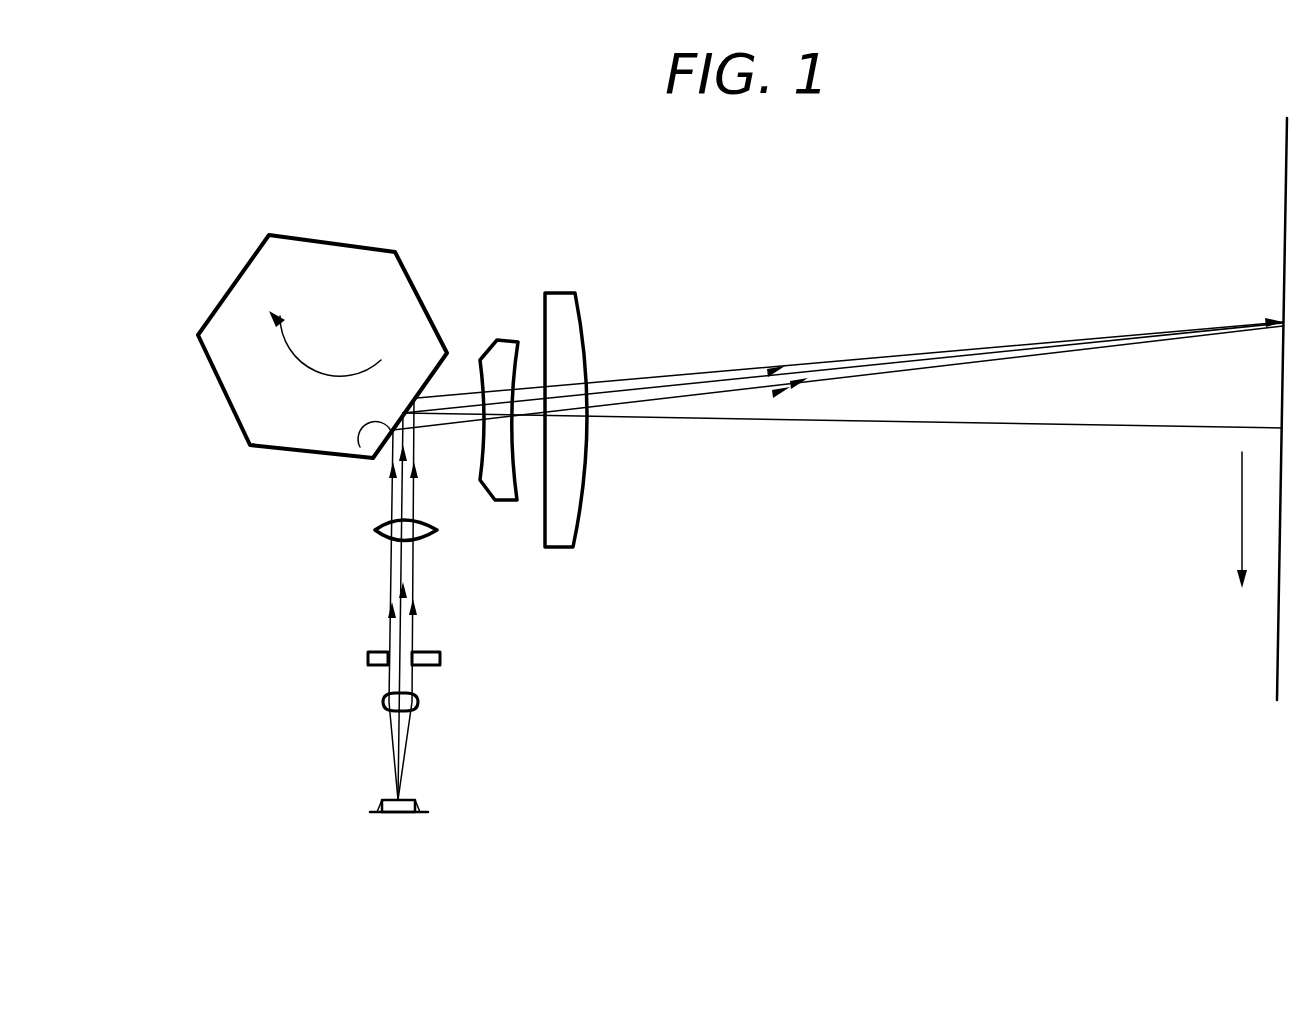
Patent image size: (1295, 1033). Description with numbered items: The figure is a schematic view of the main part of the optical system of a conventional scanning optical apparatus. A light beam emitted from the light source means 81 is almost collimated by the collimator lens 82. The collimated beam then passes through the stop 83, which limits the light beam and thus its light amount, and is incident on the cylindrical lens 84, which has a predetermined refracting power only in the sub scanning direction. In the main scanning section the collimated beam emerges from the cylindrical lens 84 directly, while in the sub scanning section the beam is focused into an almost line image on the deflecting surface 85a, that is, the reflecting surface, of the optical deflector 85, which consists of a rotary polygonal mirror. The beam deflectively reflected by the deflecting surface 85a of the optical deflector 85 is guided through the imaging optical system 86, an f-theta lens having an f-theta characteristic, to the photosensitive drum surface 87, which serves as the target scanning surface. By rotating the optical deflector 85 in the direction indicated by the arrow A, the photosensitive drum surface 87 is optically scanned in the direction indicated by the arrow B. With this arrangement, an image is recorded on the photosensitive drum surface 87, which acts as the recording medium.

The light source means 81 is at (392, 815).
The collimator lens 82 is at (418, 704).
The stop 83 is at (440, 658).
The cylindrical lens 84 is at (437, 531).
The optical deflector 85 is at (250, 420).
The deflecting surface 85a is at (361, 440).
The imaging optical system 86 is at (635, 215).
The photosensitive drum surface 87 is at (1286, 237).
The arrow indicating rotation direction of optical deflector A is at (260, 362).
The arrow indicating scanning direction B is at (1240, 532).